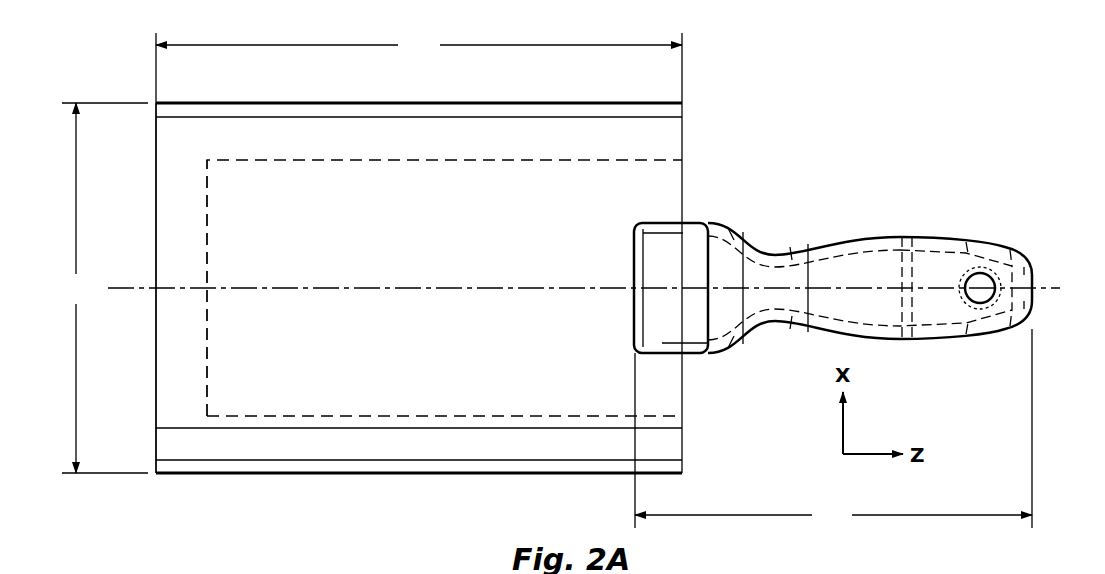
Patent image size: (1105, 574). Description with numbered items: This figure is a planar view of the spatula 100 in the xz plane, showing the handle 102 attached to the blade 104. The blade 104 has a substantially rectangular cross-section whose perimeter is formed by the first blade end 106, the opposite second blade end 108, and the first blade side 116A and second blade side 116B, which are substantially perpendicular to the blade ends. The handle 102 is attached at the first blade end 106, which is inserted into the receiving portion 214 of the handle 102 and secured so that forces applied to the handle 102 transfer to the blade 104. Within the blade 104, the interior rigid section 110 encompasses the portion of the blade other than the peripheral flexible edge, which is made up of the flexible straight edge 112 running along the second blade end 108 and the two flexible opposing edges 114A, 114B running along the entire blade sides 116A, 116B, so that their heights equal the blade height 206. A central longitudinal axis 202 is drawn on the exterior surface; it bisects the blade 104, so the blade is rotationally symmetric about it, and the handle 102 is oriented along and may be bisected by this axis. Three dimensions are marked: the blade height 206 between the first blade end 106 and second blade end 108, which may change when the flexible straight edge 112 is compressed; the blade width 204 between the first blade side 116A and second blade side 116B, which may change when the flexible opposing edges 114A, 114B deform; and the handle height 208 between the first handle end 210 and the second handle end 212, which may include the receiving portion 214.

The spatula 100 is at (911, 86).
The handle 102 is at (823, 276).
The blade 104 is at (426, 299).
The first blade end 106 is at (683, 383).
The second blade end 108 is at (156, 170).
The interior rigid section 110 is at (444, 288).
The flexible straight edge 112 is at (187, 288).
The first flexible opposing edge 114A is at (419, 131).
The second flexible opposing edge 114B is at (419, 444).
The first blade side 116A is at (266, 103).
The second blade side 116B is at (240, 474).
The central longitudinal axis 202 is at (145, 290).
The blade width 204 is at (105, 288).
The blade height 206 is at (419, 68).
The handle height 208 is at (833, 428).
The first handle end 210 is at (634, 252).
The second handle end 212 is at (1034, 279).
The receiving portion 214 is at (678, 261).